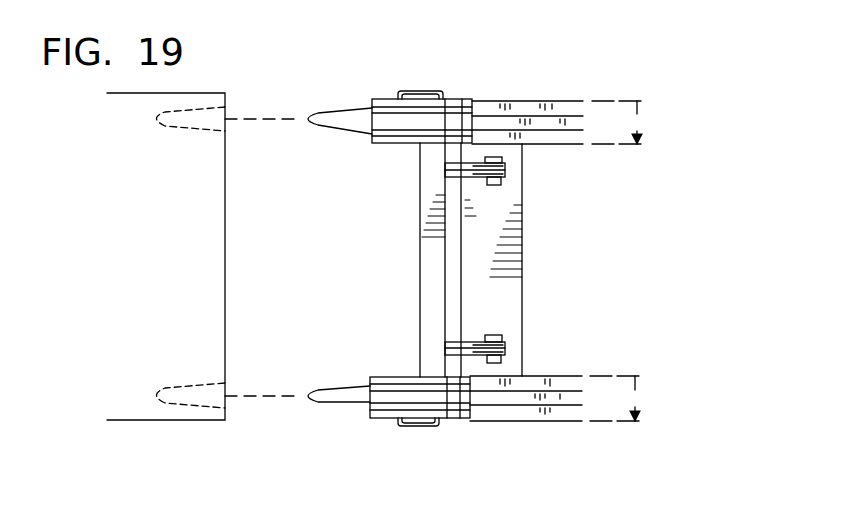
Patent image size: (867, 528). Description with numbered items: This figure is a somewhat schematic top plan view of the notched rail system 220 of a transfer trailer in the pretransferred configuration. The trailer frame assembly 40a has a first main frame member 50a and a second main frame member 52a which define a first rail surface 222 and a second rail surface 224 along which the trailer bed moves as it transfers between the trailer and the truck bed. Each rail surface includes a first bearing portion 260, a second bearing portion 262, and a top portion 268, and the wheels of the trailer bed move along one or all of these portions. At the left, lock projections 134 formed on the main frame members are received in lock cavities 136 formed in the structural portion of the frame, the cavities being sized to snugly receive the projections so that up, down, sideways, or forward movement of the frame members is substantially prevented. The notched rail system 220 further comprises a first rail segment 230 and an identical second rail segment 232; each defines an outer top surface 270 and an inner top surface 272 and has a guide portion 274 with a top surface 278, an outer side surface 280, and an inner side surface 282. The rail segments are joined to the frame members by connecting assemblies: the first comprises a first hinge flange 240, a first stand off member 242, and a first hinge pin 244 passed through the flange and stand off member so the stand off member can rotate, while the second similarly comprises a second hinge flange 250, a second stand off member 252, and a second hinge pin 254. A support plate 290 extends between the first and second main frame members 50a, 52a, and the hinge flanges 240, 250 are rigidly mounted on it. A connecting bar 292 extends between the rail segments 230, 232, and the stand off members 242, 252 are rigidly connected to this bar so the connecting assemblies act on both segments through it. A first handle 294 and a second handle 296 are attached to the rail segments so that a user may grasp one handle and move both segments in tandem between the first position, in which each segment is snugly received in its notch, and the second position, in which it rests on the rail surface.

The trailer frame assembly 40a is at (312, 95).
The first main frame member 50a is at (530, 423).
The second main frame member 52a is at (535, 93).
The lock projection 134 is at (327, 122).
The lock cavity 136 is at (175, 130).
The notched rail system 220 is at (665, 155).
The first rail surface 222 is at (622, 398).
The second rail surface 224 is at (624, 122).
The first rail segment 230 is at (330, 420).
The second rail segment 232 is at (352, 152).
The first hinge flange 240 is at (500, 358).
The first stand off member 242 is at (506, 347).
The first hinge pin 244 is at (494, 336).
The second hinge flange 250 is at (507, 170).
The second stand off member 252 is at (500, 181).
The second hinge pin 254 is at (492, 186).
The first bearing portion 260 is at (549, 138).
The second bearing portion 262 is at (554, 106).
The top portion 268 is at (564, 123).
The outer top surface 270 is at (390, 108).
The inner top surface 272 is at (398, 132).
The guide portion 274 is at (457, 120).
The top surface 278 is at (446, 120).
The outer side surface 280 is at (392, 110).
The inner side surface 282 is at (386, 130).
The support plate 290 is at (505, 277).
The connecting bar 292 is at (425, 285).
The first handle 294 is at (409, 427).
The second handle 296 is at (431, 92).